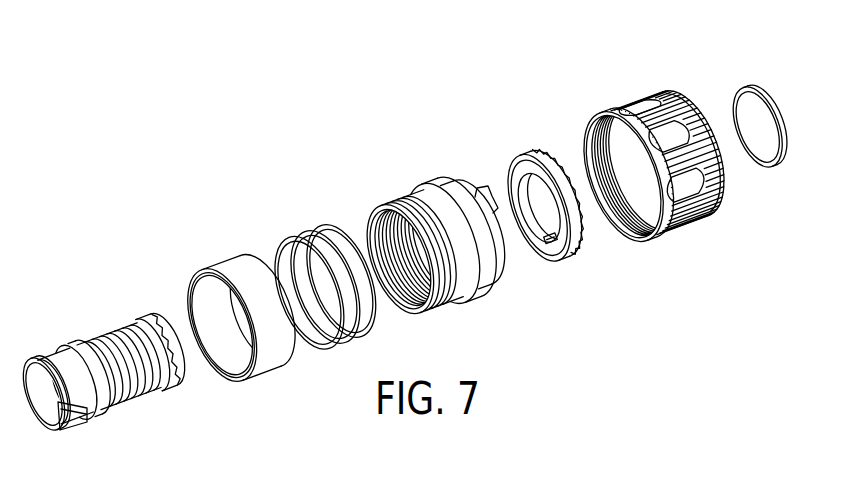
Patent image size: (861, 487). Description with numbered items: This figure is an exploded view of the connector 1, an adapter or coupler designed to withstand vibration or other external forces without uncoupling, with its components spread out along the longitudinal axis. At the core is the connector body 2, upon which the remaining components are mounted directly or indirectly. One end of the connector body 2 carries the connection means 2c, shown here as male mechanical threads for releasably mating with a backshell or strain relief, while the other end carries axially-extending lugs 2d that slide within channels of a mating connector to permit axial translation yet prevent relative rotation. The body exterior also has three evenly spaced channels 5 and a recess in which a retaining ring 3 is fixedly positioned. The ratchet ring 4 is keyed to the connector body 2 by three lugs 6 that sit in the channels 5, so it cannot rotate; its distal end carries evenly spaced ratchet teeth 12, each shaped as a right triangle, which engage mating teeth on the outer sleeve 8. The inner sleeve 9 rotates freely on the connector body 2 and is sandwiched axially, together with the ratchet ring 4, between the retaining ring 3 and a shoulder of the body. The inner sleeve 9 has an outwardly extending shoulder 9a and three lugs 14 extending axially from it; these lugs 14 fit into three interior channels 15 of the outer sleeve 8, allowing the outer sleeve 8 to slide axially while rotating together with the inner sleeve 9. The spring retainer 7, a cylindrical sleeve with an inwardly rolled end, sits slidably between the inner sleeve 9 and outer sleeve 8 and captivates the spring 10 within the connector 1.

The connector 1 is at (322, 170).
The connector body 2 is at (78, 350).
The connection means 2c is at (132, 322).
The lugs 2d is at (88, 422).
The retaining ring 3 is at (767, 98).
The ratchet ring 4 is at (558, 250).
The channels 5 is at (155, 320).
The lugs 6 is at (550, 238).
The spring retainer 7 is at (223, 266).
The outer sleeve 8 is at (683, 97).
The inner sleeve 9 is at (422, 200).
The shoulder 9a is at (457, 182).
The spring 10 is at (313, 233).
The ratchet teeth 12 is at (547, 152).
The lugs 14 is at (483, 190).
The channels 15 is at (632, 146).